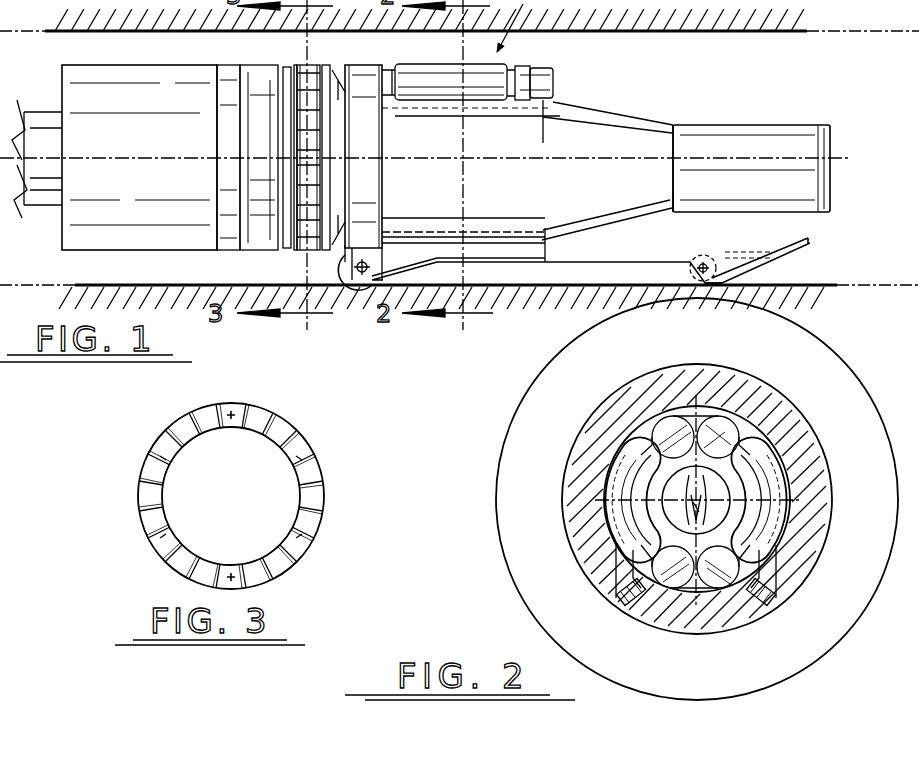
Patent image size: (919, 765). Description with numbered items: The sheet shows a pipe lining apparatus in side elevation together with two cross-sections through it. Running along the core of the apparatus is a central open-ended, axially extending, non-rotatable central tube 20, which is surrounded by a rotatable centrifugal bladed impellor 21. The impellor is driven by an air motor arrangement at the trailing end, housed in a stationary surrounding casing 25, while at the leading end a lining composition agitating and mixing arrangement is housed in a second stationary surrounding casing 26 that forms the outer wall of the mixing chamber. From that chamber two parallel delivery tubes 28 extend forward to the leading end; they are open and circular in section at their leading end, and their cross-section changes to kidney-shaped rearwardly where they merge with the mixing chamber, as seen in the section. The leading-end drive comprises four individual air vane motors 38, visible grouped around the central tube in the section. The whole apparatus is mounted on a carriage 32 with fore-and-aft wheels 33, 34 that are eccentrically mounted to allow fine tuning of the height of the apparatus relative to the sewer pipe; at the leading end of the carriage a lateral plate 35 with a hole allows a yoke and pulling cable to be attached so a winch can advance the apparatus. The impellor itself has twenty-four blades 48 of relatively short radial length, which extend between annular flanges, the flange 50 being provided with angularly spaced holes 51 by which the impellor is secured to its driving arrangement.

In FIG. 2, the central tube 20 is at (722, 505).
In FIG. 3, the centrifugal bladed impellor 21 is at (282, 409).
In FIG. 1, the stationary surrounding casing 25 is at (153, 105).
In FIG. 1, the stationary surrounding casing 26 is at (343, 83).
In FIG. 1, the delivery tubes 28 is at (728, 150).
In FIG. 2, the delivery tubes 28 is at (618, 465).
In FIG. 1, the carriage 32 is at (617, 252).
In FIG. 1, the fore wheel 33 is at (696, 255).
In FIG. 1, the aft wheel 34 is at (360, 288).
In FIG. 2, the aft wheel 34 is at (623, 607).
In FIG. 1, the lateral plate 35 is at (810, 243).
In FIG. 1, the air vane motors 38 is at (480, 89).
In FIG. 2, the air vane motors 38 is at (713, 436).
In FIG. 3, the blades 48 is at (243, 410).
In FIG. 3, the annular flange 50 is at (287, 435).
In FIG. 3, the angularly spaced holes 51 is at (300, 455).